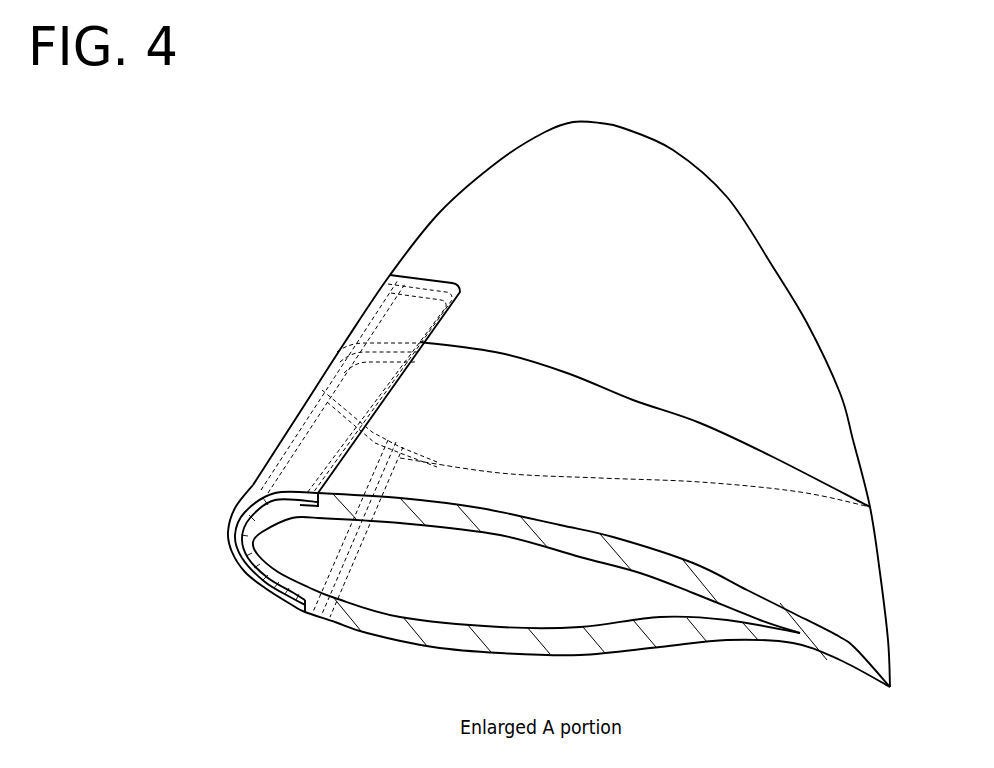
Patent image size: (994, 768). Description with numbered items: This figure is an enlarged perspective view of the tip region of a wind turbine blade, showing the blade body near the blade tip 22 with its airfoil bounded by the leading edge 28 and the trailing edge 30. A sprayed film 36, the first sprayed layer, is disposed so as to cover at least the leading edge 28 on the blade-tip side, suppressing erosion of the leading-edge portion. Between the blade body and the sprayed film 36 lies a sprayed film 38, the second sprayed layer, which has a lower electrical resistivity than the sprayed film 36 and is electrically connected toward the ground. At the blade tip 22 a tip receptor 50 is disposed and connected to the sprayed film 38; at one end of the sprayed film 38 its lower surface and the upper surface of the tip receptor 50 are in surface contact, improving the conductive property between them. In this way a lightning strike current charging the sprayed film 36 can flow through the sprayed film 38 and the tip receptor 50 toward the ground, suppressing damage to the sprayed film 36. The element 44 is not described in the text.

The blade tip 22 is at (623, 128).
The leading edge 28 is at (420, 233).
The trailing edge 30 is at (853, 440).
The sprayed film (first sprayed layer) 36 is at (302, 402).
The sprayed film (second sprayed layer) 38 is at (235, 540).
The partition wall 44 is at (420, 342).
The receptor (tip receptor) 50 is at (723, 210).